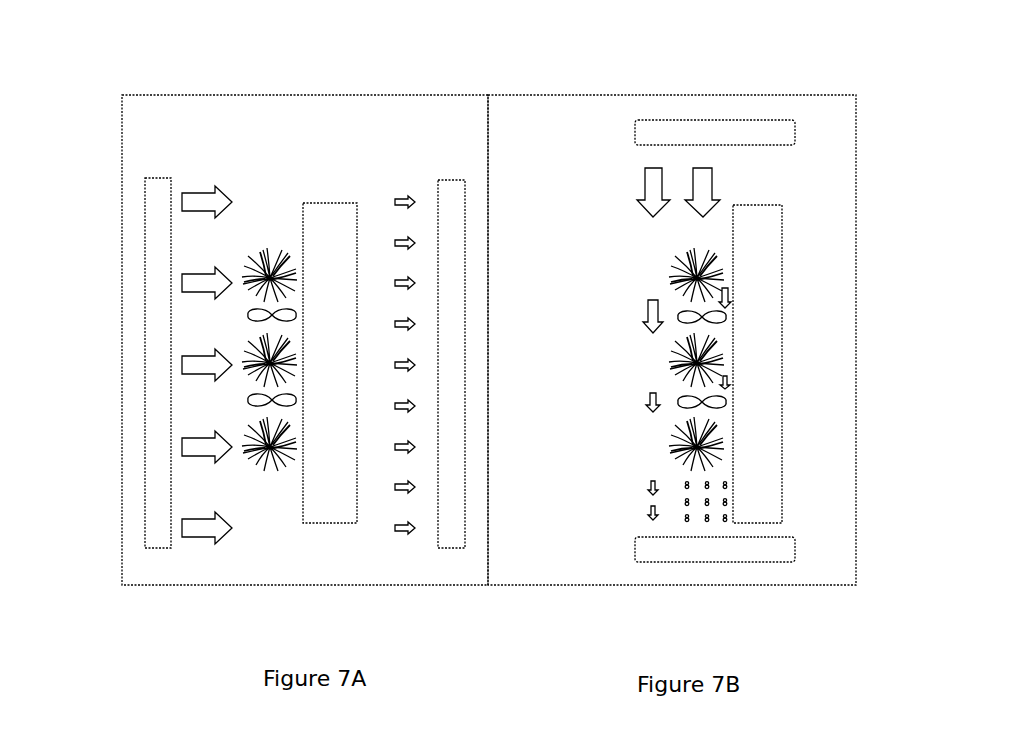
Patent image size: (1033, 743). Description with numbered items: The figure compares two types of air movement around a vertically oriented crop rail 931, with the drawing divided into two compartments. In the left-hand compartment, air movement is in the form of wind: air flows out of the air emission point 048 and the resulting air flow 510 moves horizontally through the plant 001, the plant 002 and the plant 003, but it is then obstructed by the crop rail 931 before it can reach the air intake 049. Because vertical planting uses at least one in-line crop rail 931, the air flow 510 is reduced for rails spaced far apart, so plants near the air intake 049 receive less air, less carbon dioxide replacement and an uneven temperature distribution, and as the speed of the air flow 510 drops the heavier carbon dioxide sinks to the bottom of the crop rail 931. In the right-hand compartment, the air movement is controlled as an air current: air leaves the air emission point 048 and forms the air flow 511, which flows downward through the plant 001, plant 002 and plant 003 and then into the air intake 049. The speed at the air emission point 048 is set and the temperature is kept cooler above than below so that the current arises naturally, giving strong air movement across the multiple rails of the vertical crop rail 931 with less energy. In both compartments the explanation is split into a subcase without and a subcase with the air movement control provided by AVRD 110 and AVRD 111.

In FIG. 7A, the plant 001 is at (272, 245).
In FIG. 7B, the plant 001 is at (733, 273).
In FIG. 7A, the plant 002 is at (262, 352).
In FIG. 7B, the plant 002 is at (733, 358).
In FIG. 7A, the plant 003 is at (277, 473).
In FIG. 7B, the plant 003 is at (733, 445).
In FIG. 7A, the AVRD 110 is at (262, 314).
In FIG. 7B, the AVRD 110 is at (733, 315).
In FIG. 7A, the AVRD 111 is at (262, 400).
In FIG. 7B, the AVRD 111 is at (733, 400).
In FIG. 7A, the air emission point 048 is at (145, 412).
In FIG. 7B, the air emission point 048 is at (748, 119).
In FIG. 7A, the air intake 049 is at (438, 548).
In FIG. 7B, the air intake 049 is at (795, 553).
In FIG. 7A, the air flow 510 is at (188, 541).
In FIG. 7B, the air flow 511 is at (645, 188).
In FIG. 7A, the crop rail 931 is at (327, 523).
In FIG. 7B, the crop rail 931 is at (782, 482).